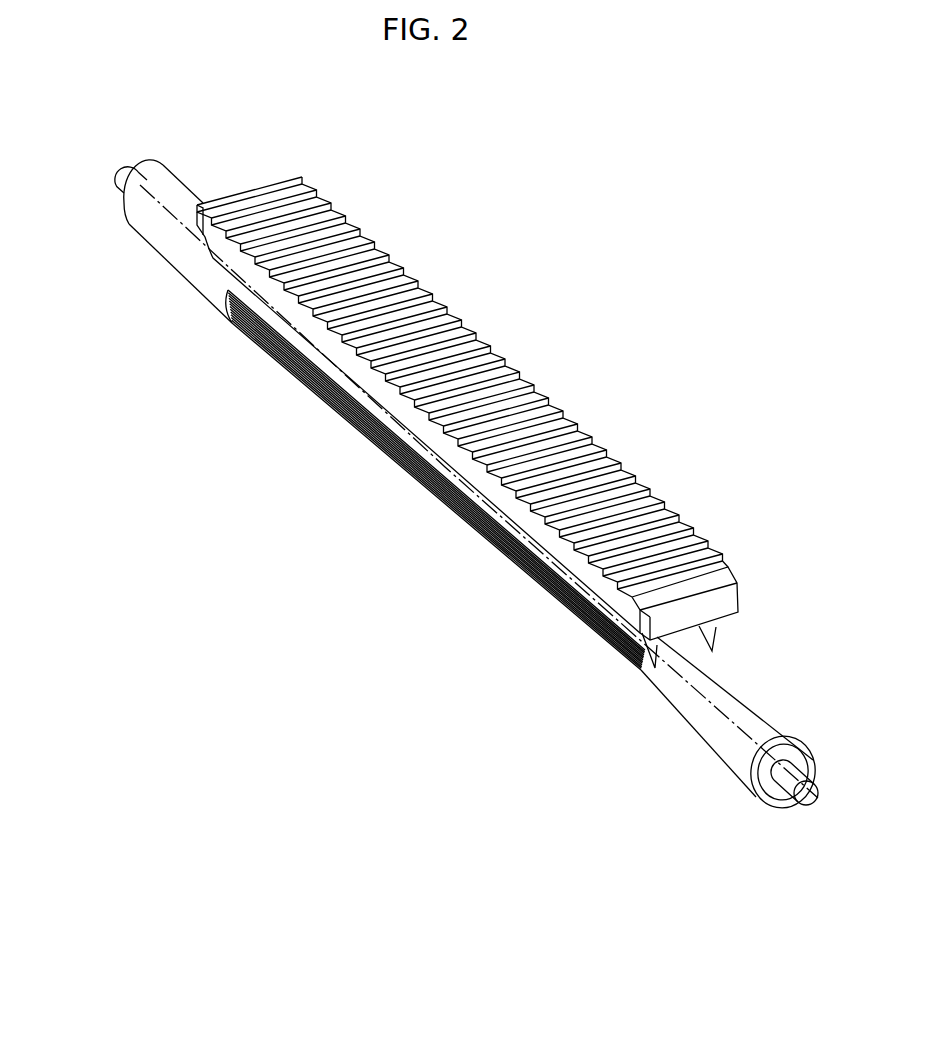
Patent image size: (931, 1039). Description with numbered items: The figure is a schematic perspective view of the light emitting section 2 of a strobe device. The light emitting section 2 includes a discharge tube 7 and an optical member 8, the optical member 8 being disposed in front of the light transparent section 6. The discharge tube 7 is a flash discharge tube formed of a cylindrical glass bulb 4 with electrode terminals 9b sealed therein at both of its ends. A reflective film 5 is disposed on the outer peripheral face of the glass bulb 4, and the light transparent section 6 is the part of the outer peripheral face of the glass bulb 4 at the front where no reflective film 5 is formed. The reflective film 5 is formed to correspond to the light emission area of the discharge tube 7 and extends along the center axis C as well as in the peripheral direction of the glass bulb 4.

The light emitting section 2 is at (421, 423).
The cylindrical glass bulb 4 is at (167, 250).
The reflective film 5 is at (358, 428).
The light transparent section 6 is at (690, 632).
The discharge tube 7 is at (273, 372).
The optical member 8 is at (275, 320).
The electrode terminal 9b is at (122, 185).
The center axis C is at (445, 467).